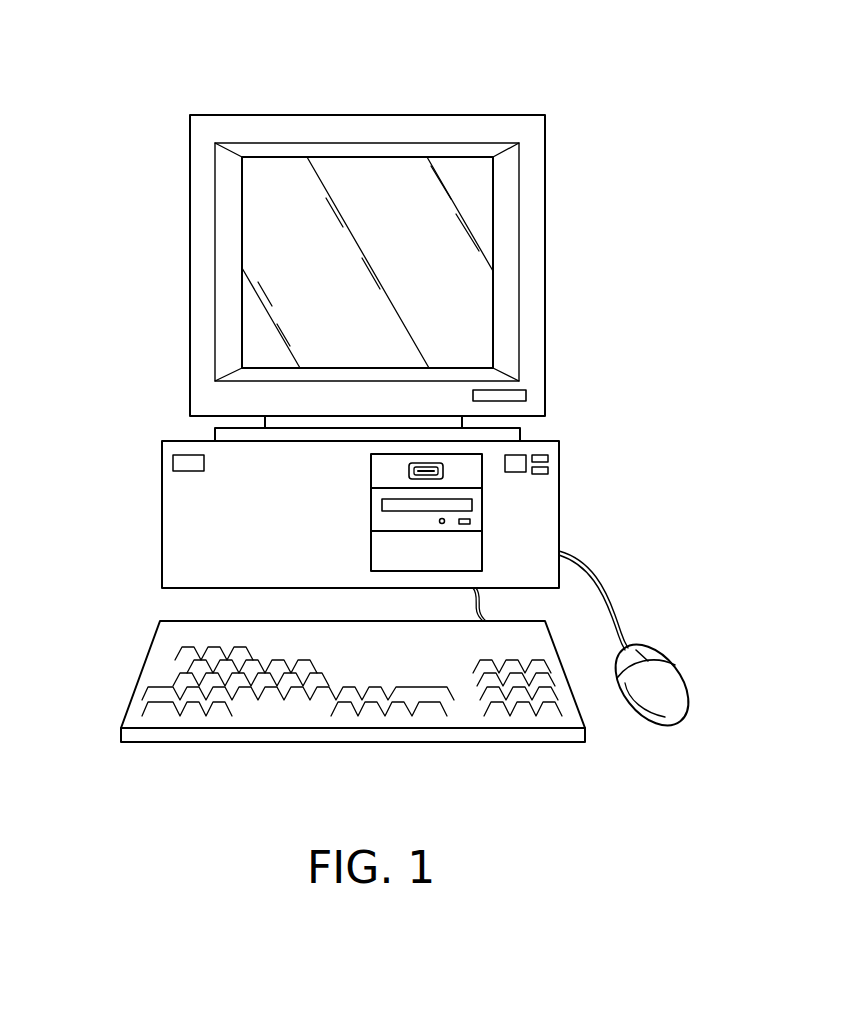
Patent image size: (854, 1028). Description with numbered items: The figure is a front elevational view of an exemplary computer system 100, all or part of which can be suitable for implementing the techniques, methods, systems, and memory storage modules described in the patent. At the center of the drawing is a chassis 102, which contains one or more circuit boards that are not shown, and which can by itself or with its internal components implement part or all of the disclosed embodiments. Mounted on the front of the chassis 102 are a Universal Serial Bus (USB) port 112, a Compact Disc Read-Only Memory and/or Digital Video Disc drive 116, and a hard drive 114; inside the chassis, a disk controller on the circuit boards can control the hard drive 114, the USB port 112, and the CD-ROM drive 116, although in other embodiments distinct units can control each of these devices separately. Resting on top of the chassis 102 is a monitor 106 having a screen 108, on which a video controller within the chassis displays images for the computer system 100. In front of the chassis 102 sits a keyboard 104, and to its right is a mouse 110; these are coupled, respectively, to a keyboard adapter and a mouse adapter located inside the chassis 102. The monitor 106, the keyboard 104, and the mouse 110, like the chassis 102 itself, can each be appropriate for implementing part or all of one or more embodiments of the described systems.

The computer system 100 is at (540, 93).
The chassis 102 is at (162, 517).
The keyboard 104 is at (145, 668).
The monitor 106 is at (262, 115).
The screen 108 is at (287, 263).
The mouse 110 is at (668, 675).
The Universal Serial Bus (USB) port 112 is at (444, 470).
The hard drive 114 is at (474, 549).
The CD-ROM and/or DVD drive 116 is at (474, 509).